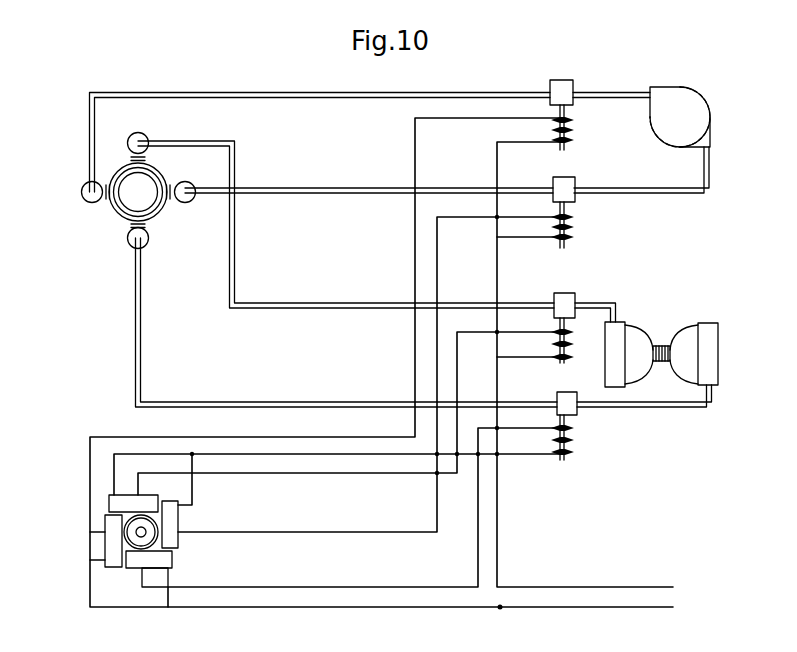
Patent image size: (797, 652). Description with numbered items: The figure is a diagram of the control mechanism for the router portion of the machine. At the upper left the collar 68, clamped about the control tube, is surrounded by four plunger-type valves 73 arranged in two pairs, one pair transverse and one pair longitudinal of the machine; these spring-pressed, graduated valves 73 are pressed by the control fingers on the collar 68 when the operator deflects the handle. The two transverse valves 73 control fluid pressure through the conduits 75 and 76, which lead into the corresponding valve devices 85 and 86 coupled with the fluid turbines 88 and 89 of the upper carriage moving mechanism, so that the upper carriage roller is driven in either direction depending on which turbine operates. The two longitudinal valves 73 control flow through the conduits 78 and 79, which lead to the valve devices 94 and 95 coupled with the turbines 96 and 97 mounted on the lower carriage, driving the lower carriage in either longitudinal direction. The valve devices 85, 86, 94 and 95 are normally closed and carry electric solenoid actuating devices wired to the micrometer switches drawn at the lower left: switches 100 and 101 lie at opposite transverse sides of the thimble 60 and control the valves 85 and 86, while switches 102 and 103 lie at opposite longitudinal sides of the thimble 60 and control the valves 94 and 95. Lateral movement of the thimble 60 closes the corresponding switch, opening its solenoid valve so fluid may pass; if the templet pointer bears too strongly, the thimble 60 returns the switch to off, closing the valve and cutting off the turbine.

The thimble 60 is at (152, 537).
The collar 68 is at (114, 176).
The plunger-type valves 73 is at (179, 185).
The conduit 75 is at (138, 92).
The conduit 76 is at (208, 195).
The conduit 78 is at (229, 267).
The conduit 79 is at (142, 267).
The valve device 85 is at (568, 86).
The valve device 86 is at (567, 187).
The fluid turbine 88 is at (681, 97).
The fluid turbine 89 is at (711, 138).
The valve device 94 is at (570, 302).
The valve device 95 is at (571, 409).
The turbine 96 is at (620, 337).
The turbine 97 is at (703, 332).
The micrometer switch 100 is at (110, 522).
The micrometer switch 101 is at (170, 517).
The micrometer switch 102 is at (135, 556).
The micrometer switch 103 is at (122, 499).